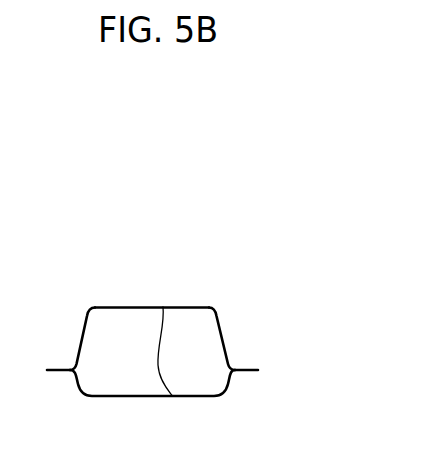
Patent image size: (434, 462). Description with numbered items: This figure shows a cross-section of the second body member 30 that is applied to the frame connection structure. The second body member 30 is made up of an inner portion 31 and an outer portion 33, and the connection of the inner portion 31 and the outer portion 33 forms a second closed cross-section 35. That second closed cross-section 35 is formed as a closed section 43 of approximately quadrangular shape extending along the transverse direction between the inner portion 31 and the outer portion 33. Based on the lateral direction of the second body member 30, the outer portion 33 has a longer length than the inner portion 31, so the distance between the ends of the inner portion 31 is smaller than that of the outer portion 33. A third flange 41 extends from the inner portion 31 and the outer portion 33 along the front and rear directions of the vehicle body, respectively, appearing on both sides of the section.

The second body member 30 is at (66, 154).
The inner portion 31 is at (163, 307).
The outer portion 33 is at (204, 307).
The second closed cross-section 35 is at (138, 254).
The third flange 41 is at (52, 368).
The closed section 43 is at (100, 321).